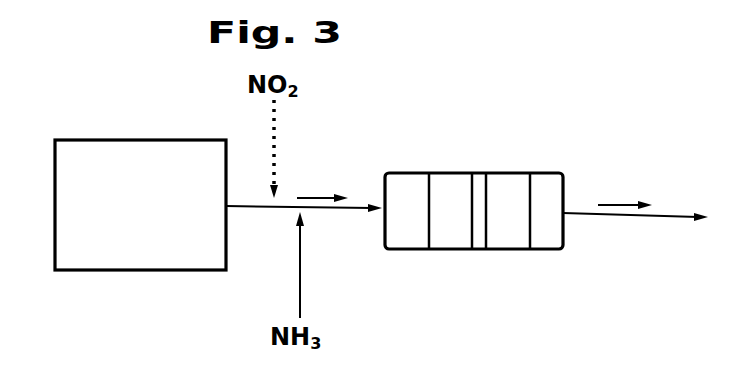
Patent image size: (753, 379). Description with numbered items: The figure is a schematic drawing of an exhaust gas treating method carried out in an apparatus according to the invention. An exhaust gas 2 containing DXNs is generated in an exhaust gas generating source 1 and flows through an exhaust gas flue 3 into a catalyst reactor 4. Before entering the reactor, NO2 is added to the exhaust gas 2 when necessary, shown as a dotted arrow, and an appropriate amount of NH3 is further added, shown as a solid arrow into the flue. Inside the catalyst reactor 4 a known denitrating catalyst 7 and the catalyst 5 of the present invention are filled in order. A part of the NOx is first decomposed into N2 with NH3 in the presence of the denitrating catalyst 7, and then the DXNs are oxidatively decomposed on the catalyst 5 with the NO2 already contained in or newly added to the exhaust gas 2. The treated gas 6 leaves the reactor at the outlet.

The exhaust gas generating source 1 is at (140, 140).
The gas containing DXNs 2 is at (318, 198).
The exhaust gas flue 3 is at (262, 210).
The catalyst reactor 4 is at (549, 173).
The catalyst of the present invention 5 is at (507, 235).
The treated gas 6 is at (622, 203).
The denitrating catalyst 7 is at (447, 235).